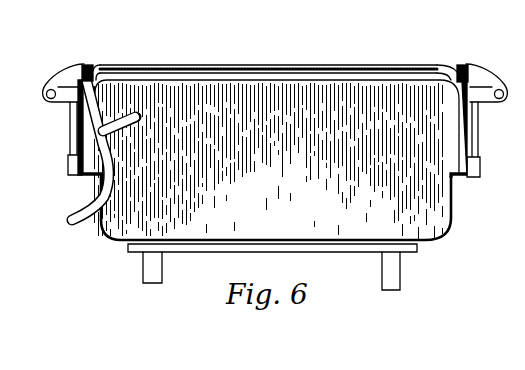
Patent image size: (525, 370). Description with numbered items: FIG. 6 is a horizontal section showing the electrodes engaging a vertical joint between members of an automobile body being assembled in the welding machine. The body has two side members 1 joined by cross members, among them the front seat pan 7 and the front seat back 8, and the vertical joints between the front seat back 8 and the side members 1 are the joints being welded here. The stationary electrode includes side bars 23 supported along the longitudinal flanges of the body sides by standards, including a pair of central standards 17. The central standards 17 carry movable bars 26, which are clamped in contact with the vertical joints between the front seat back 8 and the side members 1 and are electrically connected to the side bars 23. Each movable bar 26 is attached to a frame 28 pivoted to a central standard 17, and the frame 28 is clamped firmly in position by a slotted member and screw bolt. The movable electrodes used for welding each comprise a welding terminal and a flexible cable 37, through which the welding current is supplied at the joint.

The side member 1 is at (77, 143).
The front seat pan 7 is at (220, 228).
The front seat back 8 is at (211, 66).
The central standard 17 is at (72, 120).
The side bar 23 is at (152, 267).
The movable bar 26 is at (93, 66).
The frame 28 is at (61, 70).
The flexible cable 37 is at (89, 206).